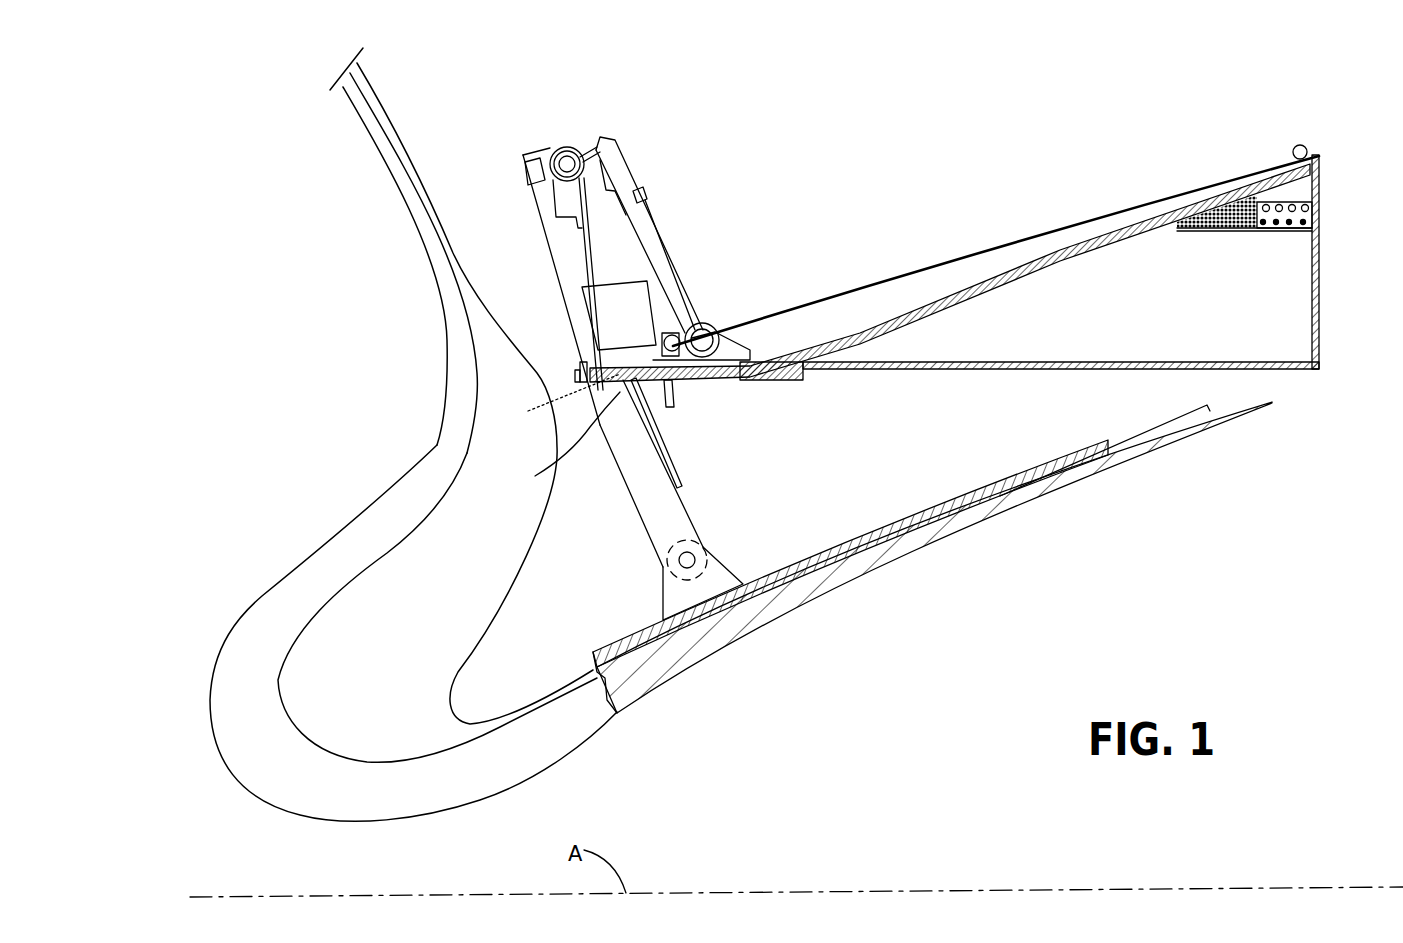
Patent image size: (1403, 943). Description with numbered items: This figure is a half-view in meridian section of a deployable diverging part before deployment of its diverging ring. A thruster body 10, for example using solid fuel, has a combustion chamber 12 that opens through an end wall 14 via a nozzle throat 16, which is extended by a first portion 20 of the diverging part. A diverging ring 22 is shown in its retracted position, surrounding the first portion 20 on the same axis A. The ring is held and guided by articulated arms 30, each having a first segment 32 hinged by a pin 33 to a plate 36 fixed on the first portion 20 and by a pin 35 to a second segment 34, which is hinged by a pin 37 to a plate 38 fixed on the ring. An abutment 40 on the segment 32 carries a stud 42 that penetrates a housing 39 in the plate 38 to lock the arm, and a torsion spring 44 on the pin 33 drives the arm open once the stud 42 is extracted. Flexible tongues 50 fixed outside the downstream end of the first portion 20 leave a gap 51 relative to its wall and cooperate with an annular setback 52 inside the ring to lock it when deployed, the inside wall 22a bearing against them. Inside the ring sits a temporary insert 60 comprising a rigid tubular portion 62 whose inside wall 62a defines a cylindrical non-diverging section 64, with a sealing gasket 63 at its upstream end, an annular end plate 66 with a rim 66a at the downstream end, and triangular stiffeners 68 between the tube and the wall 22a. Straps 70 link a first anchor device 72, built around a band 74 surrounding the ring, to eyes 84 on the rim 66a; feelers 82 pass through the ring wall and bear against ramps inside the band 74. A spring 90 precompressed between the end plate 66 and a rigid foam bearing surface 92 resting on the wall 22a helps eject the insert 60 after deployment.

The thruster body 10 is at (414, 148).
The combustion chamber 12 is at (351, 247).
The end wall 14 is at (392, 480).
The nozzle throat 16 is at (303, 879).
The first portion of the deployable diverging part 20 is at (968, 528).
The diverging ring 22 is at (1177, 212).
The inside wall of the diverging ring 22a is at (634, 390).
The articulated arm 30 is at (634, 141).
The first segment 32 is at (657, 516).
The pin 33 is at (692, 558).
The second segment 34 is at (659, 214).
The pin 35 is at (571, 147).
The plate 36 is at (672, 597).
The pin 37 is at (707, 324).
The plate 38 is at (735, 348).
The housing 39 is at (561, 400).
The abutment 40 is at (617, 290).
The stud 42 is at (630, 352).
The torsion spring 44 is at (559, 152).
The flexible tongues 50 is at (1184, 409).
The gap 51 is at (1210, 410).
The annular setback 52 is at (566, 441).
The insert 60 is at (1336, 339).
The tubular portion 62 is at (990, 361).
The inside wall of the tubular portion 62a is at (914, 372).
The sealing gasket 63 is at (785, 381).
The non-diverging section 64 is at (924, 463).
The annular end plate 66 is at (1322, 278).
The rim 66a is at (1292, 170).
The stiffeners 68 is at (1180, 342).
The strap 70 is at (981, 250).
The first anchor device 72 is at (672, 335).
The band 74 is at (696, 374).
The feeler 82 is at (675, 405).
The eye 84 is at (1303, 146).
The spring 90 is at (1313, 216).
The bearing surface 92 is at (1243, 230).